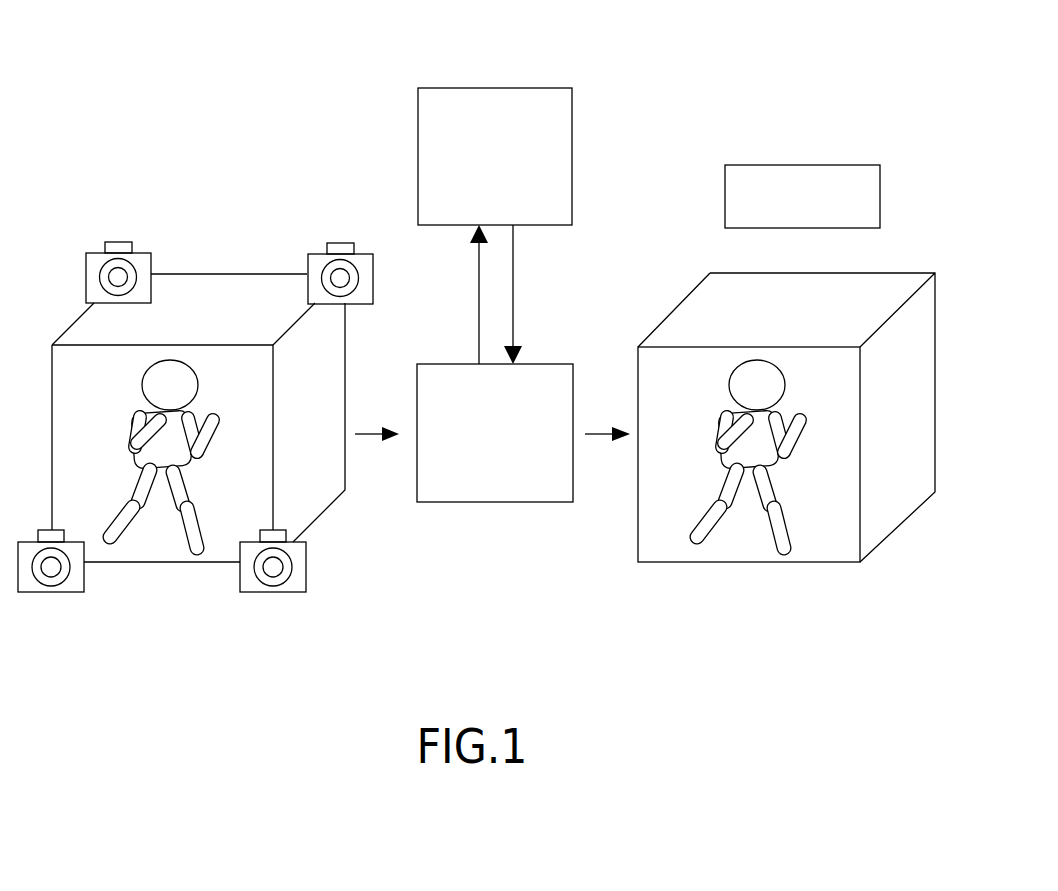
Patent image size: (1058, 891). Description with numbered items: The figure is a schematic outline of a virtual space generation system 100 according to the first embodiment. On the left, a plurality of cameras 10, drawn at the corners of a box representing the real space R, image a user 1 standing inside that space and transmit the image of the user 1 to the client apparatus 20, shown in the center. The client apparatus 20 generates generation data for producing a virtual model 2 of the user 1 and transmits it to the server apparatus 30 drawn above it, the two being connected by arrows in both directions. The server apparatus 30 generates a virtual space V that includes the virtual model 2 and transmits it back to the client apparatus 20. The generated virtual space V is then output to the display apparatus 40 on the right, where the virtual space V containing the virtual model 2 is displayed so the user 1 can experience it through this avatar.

The virtual space generation system 100 is at (157, 73).
The camera 10 is at (119, 242).
The user 1 is at (193, 556).
The virtual model 2 is at (781, 556).
The client apparatus 20 is at (493, 502).
The server apparatus 30 is at (495, 88).
The display apparatus 40 is at (804, 165).